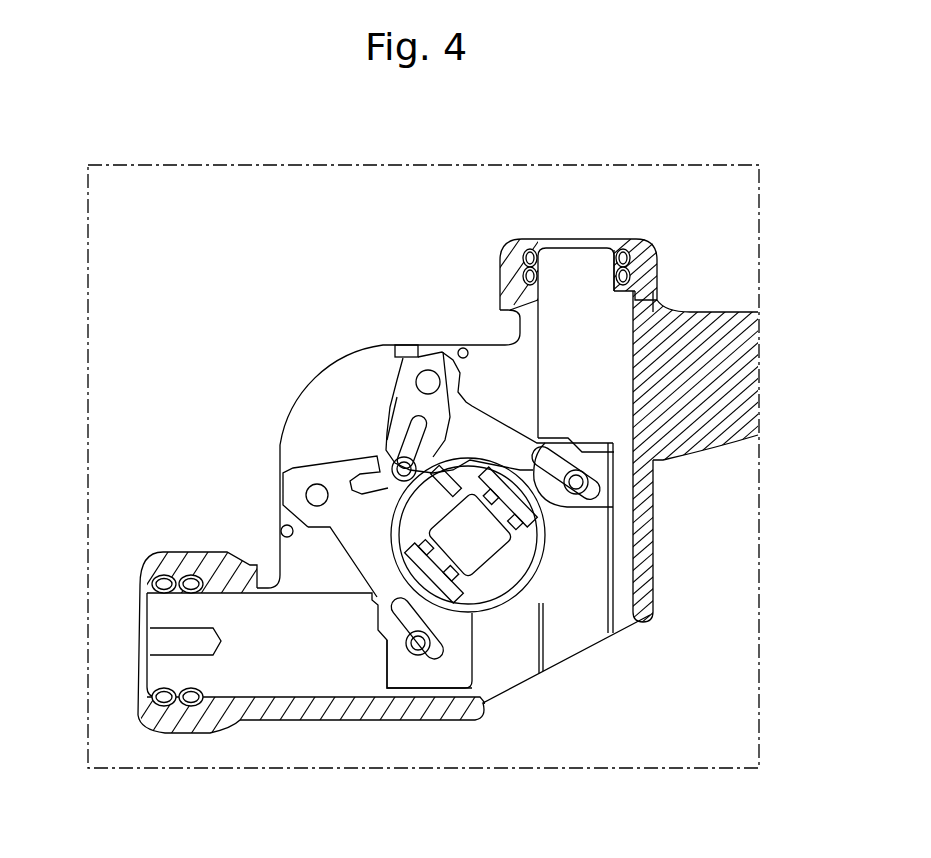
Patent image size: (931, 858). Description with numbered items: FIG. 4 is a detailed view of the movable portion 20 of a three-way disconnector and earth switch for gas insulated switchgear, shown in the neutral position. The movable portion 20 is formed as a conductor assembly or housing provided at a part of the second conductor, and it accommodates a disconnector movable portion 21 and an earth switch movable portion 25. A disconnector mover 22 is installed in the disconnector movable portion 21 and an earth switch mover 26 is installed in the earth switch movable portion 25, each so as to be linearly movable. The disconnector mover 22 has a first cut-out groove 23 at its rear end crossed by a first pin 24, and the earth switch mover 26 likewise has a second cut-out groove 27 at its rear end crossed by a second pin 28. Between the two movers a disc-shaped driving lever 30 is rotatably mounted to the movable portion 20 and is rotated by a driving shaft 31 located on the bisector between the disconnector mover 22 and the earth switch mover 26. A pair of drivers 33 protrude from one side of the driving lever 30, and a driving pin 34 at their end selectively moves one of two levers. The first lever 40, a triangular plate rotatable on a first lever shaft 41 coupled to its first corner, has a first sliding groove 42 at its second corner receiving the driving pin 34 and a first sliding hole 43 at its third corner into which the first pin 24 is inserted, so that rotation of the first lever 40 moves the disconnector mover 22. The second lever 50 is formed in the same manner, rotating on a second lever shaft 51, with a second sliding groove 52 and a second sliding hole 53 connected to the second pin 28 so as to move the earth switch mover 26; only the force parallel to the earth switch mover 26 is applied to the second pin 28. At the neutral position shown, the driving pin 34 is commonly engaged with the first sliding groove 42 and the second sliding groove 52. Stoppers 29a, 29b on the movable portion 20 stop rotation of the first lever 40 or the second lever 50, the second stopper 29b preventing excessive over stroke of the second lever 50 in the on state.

The movable portion 20 is at (337, 377).
The disconnector movable portion 21 is at (308, 700).
The disconnector mover 22 is at (270, 658).
The first cut-out groove 23 is at (447, 670).
The first pin 24 is at (425, 660).
The earth switch movable portion 25 is at (643, 275).
The earth switch mover 26 is at (593, 315).
The second cut-out groove 27 is at (595, 490).
The second pin 28 is at (590, 481).
The stopper 29a is at (281, 532).
The second stopper 29b is at (465, 347).
The driving lever 30 is at (512, 560).
The driving shaft 31 is at (482, 548).
The driver 33 is at (443, 352).
The driving pin 34 is at (380, 447).
The first lever 40 is at (370, 540).
The first lever shaft 41 is at (307, 496).
The first sliding groove 42 is at (392, 470).
The first sliding hole 43 is at (407, 623).
The second lever 50 is at (473, 433).
The second lever shaft 51 is at (425, 372).
The second sliding groove 52 is at (385, 450).
The second sliding hole 53 is at (593, 467).